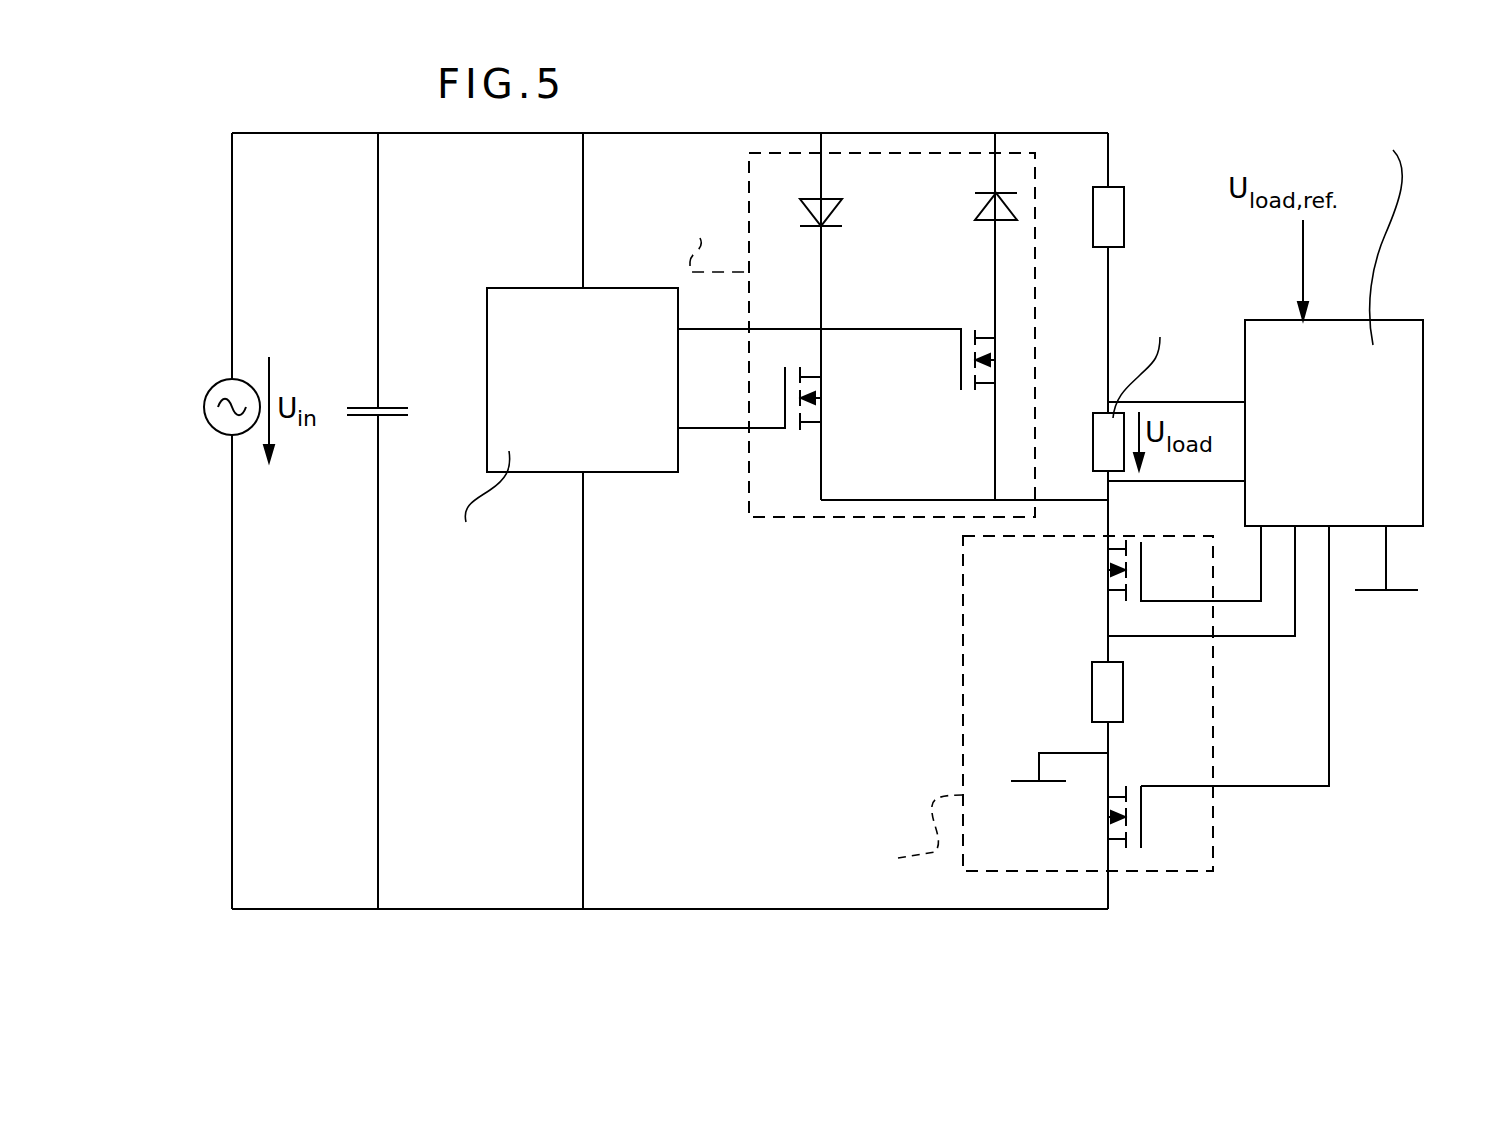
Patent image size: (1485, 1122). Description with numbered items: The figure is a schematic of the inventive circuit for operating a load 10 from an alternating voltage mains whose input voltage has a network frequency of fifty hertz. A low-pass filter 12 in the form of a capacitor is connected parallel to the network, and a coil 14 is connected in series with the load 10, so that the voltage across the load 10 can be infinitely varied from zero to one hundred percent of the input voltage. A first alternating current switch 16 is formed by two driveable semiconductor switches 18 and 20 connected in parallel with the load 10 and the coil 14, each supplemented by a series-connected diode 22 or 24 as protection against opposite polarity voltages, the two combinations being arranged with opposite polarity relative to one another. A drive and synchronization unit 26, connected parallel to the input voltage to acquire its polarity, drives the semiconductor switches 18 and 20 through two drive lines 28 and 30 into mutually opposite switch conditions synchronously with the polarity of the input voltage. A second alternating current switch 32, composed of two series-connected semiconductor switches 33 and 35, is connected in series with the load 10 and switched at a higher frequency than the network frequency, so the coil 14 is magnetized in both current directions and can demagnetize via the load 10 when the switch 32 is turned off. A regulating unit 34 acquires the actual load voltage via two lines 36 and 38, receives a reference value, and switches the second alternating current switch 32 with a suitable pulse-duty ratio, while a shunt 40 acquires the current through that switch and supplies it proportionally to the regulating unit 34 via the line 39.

The load 10 is at (1136, 388).
The low-pass filter 12 is at (384, 521).
The coil 14 is at (1130, 217).
The first alternating current switch 16 is at (772, 178).
The semiconductor switch 18 is at (834, 398).
The semiconductor switch 20 is at (955, 360).
The diode 22 is at (841, 209).
The diode 24 is at (975, 202).
The drive and synchronization unit 26 is at (548, 452).
The drive line 28 is at (731, 397).
The drive line 30 is at (819, 341).
The second alternating current switch 32 is at (985, 620).
The semiconductor switch 33 is at (1163, 563).
The regulating unit 34 is at (1347, 342).
The semiconductor switch 35 is at (1197, 687).
The line 36 is at (1176, 383).
The line 38 is at (1176, 497).
The line 39 is at (1201, 599).
The shunt 40 is at (1126, 692).